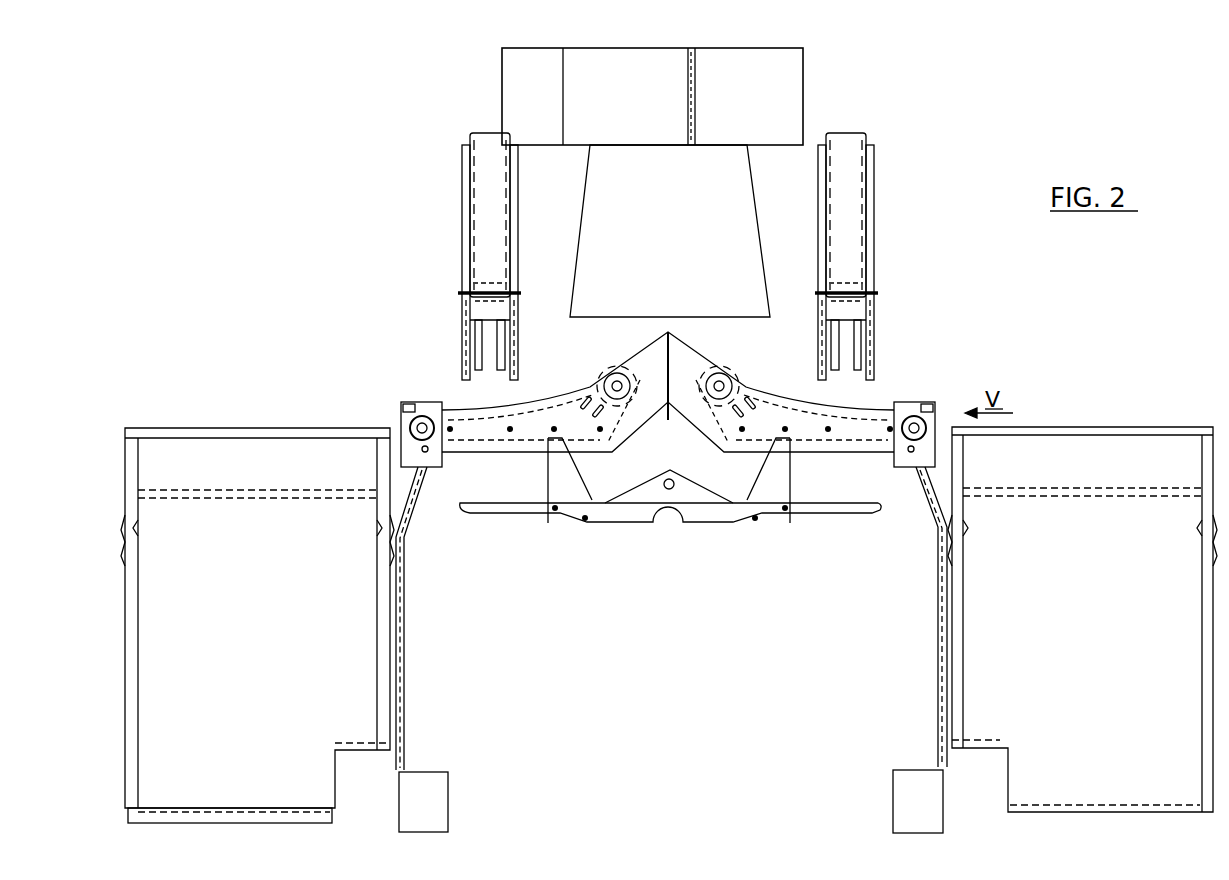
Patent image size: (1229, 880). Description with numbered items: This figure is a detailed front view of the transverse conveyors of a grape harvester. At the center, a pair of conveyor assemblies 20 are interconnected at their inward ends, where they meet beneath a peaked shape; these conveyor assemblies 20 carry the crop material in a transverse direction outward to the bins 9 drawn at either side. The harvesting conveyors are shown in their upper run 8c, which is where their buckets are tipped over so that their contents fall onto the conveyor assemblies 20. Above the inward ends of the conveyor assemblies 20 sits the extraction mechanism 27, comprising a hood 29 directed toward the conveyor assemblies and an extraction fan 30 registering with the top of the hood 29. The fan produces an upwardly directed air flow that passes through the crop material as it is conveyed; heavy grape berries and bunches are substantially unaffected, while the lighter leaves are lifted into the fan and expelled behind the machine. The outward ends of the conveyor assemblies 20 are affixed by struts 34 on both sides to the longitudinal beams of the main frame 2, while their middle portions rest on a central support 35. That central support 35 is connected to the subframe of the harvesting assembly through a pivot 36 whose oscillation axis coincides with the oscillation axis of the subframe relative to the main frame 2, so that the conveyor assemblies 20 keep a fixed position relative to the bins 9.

The main frame 2 is at (443, 807).
The upper run 8c is at (898, 236).
The bin 9 is at (253, 438).
The conveyor assembly 20 is at (452, 410).
The extraction mechanism 27 is at (842, 110).
The hood 29 is at (752, 243).
The extraction fan 30 is at (793, 80).
The strut 34 is at (404, 665).
The central support 35 is at (617, 518).
The pivot 36 is at (669, 489).